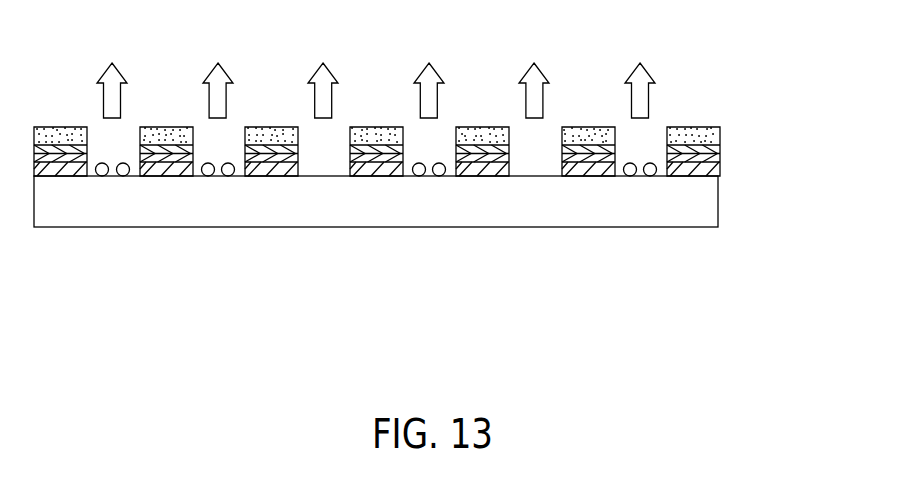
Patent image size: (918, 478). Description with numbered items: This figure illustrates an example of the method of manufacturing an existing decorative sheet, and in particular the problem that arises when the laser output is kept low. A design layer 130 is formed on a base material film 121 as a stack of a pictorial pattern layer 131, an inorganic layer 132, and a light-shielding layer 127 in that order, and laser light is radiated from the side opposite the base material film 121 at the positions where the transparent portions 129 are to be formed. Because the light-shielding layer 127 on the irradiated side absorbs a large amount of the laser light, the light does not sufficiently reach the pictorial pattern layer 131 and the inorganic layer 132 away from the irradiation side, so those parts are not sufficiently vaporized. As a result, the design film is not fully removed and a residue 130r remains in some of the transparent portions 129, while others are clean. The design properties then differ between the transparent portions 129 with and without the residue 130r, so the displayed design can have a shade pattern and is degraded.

The base material film 121 is at (718, 208).
The light-shielding layer 127 is at (718, 132).
The transparent portions 129 is at (535, 157).
The design layer 130 is at (797, 123).
The residue 130r is at (228, 176).
The pictorial pattern layer 131 is at (718, 160).
The inorganic layer 132 is at (718, 147).